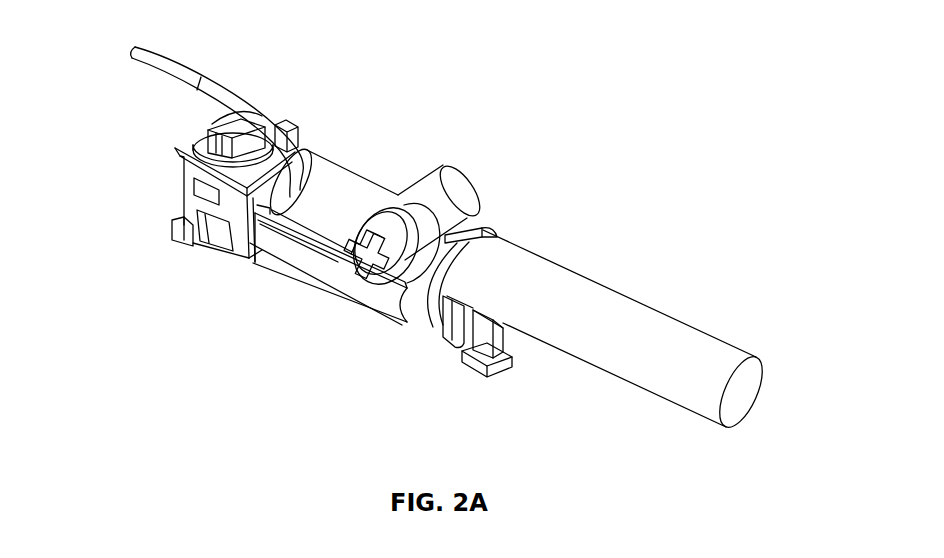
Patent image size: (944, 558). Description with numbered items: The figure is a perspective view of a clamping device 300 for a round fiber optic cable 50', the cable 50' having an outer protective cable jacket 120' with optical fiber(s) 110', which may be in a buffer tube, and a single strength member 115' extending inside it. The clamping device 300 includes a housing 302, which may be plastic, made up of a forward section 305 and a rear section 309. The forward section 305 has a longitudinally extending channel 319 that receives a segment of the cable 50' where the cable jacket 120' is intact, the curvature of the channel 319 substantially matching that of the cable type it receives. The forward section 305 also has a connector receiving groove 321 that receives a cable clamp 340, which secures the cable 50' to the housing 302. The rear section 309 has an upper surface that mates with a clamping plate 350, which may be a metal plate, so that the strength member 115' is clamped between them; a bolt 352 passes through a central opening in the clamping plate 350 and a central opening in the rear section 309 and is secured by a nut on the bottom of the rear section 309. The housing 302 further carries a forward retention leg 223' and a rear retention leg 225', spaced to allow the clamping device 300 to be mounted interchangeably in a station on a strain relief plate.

The clamping device 300 is at (586, 64).
The optical fiber 110' is at (217, 102).
The clamping plate 350 is at (192, 150).
The bolt 352 is at (196, 146).
The rear section 309 is at (188, 203).
The rear retention leg 225' is at (160, 254).
The strength member 115' is at (351, 206).
The cable clamp 340 is at (452, 183).
The housing 302 is at (297, 257).
The forward section 305 is at (338, 243).
The channel 319 is at (255, 216).
The connector receiving groove 321 is at (434, 337).
The forward retention leg 223' is at (521, 360).
The cable jacket 120' is at (601, 328).
The cable 50' is at (741, 358).